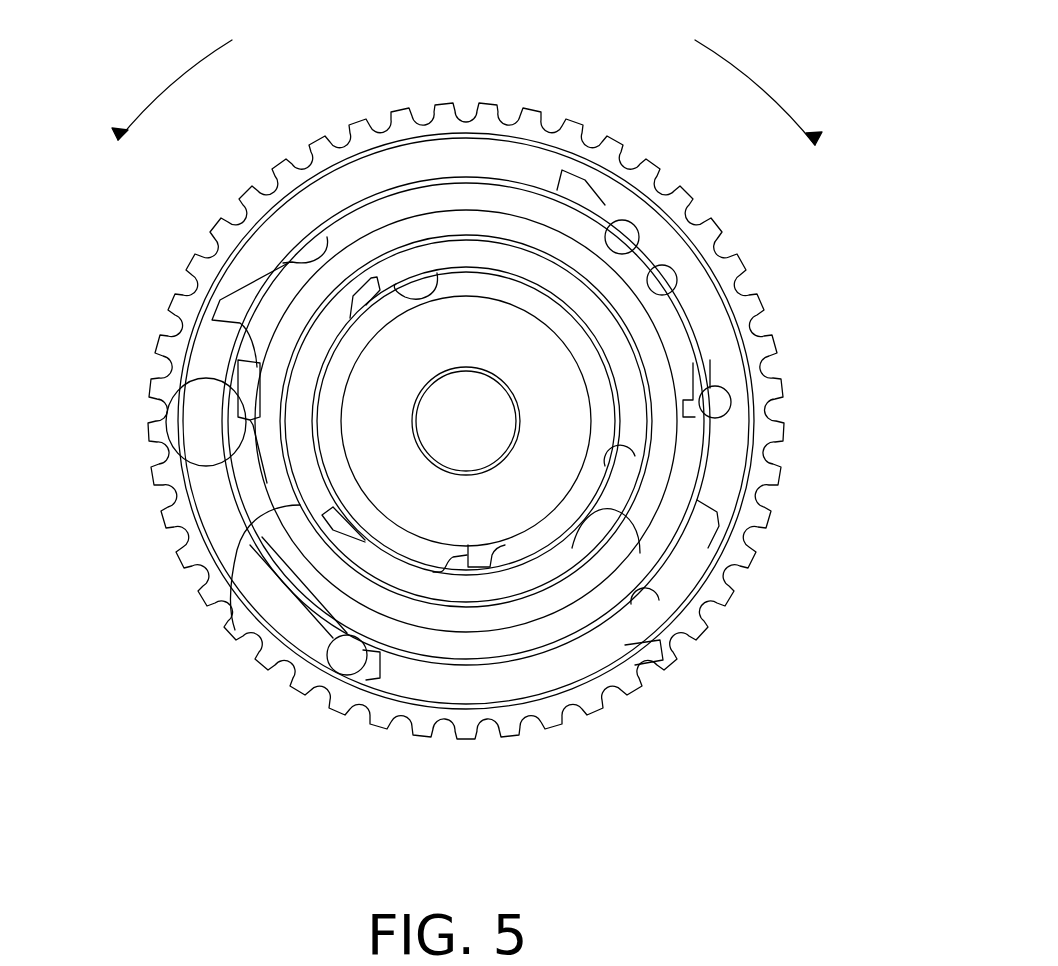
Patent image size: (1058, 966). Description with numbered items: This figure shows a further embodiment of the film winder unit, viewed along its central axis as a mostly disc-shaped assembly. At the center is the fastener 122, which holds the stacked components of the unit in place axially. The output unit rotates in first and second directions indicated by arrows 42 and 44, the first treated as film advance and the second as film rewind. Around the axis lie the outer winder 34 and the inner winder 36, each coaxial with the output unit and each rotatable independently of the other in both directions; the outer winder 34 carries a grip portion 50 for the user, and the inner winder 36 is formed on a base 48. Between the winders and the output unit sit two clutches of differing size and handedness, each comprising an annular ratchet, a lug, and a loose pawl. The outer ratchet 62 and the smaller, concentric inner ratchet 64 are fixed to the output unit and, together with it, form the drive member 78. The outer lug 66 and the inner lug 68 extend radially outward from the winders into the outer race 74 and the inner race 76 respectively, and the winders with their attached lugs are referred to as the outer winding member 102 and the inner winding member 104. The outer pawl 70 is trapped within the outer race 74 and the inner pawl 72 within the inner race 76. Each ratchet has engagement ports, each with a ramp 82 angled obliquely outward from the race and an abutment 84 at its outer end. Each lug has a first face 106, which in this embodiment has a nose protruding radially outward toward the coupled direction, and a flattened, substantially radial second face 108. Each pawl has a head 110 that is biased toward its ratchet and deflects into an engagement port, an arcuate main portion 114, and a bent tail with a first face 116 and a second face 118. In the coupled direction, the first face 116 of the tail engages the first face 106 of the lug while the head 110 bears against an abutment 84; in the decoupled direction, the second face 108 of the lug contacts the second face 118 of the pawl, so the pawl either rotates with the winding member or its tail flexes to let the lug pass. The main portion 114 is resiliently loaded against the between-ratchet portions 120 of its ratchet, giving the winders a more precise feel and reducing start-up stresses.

The outer winder 34 is at (258, 663).
The grip portion 50 is at (402, 452).
The outer winding member 102 is at (399, 454).
The inner winder 36 is at (700, 365).
The base 48 is at (579, 421).
The inner winding member 104 is at (592, 421).
The arrow 42 is at (172, 72).
The arrow 44 is at (758, 81).
The outer ratchet 62 is at (622, 220).
The inner ratchet 64 is at (630, 440).
The outer lug 66 is at (168, 408).
The inner lug 68 is at (497, 562).
The outer pawl 70 is at (712, 212).
The inner pawl 72 is at (479, 68).
The outer race 74 is at (507, 197).
The inner race 76 is at (520, 297).
The drive member 78 is at (262, 640).
The ramp 82 is at (640, 553).
The abutment 84 is at (390, 723).
The first face 106 is at (255, 357).
The second face 108 is at (230, 455).
The head 110 is at (335, 673).
The main portion 114 is at (327, 237).
The first face 116 is at (735, 365).
The second face 118 is at (705, 403).
The between-ratchet portions 120 is at (700, 560).
The fastener 122 is at (470, 415).